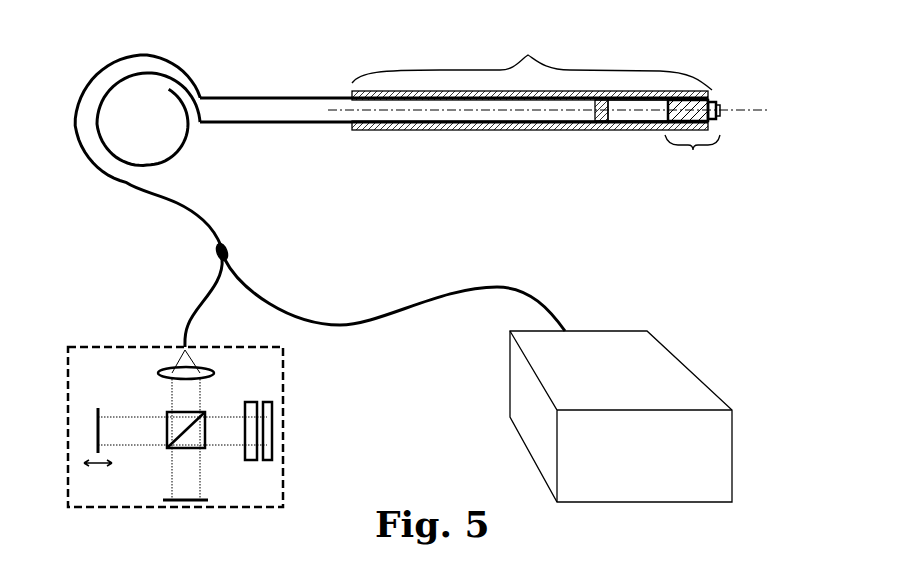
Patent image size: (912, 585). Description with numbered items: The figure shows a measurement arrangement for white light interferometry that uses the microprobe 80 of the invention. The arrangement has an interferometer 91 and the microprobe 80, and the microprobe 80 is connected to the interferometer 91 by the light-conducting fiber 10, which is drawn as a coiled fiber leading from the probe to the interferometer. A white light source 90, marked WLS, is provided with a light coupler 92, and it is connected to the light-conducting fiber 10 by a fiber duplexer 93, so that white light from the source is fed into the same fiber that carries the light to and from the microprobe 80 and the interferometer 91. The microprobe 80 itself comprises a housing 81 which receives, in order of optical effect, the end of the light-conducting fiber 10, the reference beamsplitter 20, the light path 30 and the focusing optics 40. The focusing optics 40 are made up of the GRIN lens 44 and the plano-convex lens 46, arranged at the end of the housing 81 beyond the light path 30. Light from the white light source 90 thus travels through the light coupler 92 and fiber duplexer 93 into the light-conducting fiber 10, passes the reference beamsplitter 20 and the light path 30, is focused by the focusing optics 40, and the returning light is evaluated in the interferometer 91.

The light-conducting fiber 10 is at (350, 98).
The reference beamsplitter 20 is at (598, 128).
The light path 30 is at (625, 127).
The focusing optics 40 is at (693, 150).
The GRIN lens 44 is at (709, 99).
The plano-convex lens 46 is at (720, 118).
The microprobe 80 is at (532, 56).
The housing 81 is at (530, 131).
The white light source 90 is at (653, 355).
The interferometer 91 is at (283, 380).
The light coupler 92 is at (368, 318).
The fiber duplexer 93 is at (228, 250).